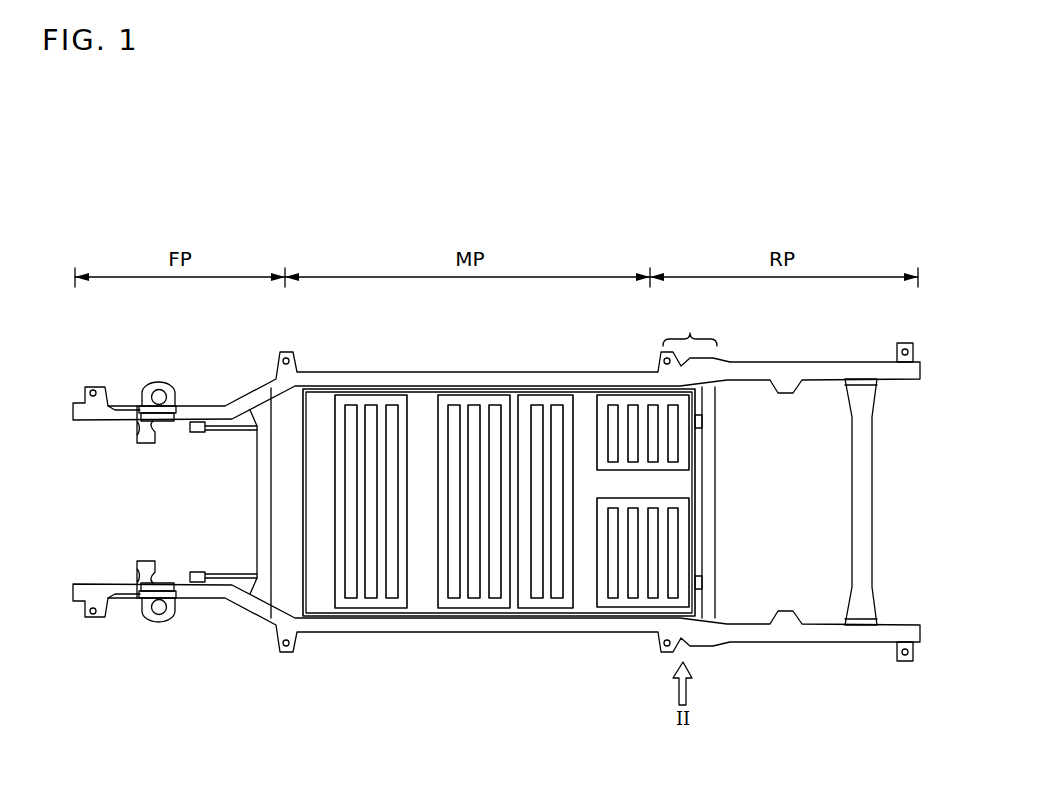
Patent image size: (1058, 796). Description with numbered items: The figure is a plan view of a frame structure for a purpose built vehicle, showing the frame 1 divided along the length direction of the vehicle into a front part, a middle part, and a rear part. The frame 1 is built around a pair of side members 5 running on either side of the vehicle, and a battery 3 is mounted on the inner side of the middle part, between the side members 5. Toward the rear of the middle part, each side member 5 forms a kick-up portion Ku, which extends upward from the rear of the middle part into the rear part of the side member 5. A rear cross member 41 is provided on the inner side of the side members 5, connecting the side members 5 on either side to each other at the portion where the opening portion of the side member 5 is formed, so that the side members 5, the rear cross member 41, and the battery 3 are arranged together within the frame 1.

The frame 1 is at (75, 166).
The battery 3 is at (509, 413).
The side member 5 is at (356, 386).
The rear cross member 41 is at (712, 503).
The kick-up portion Ku is at (690, 338).